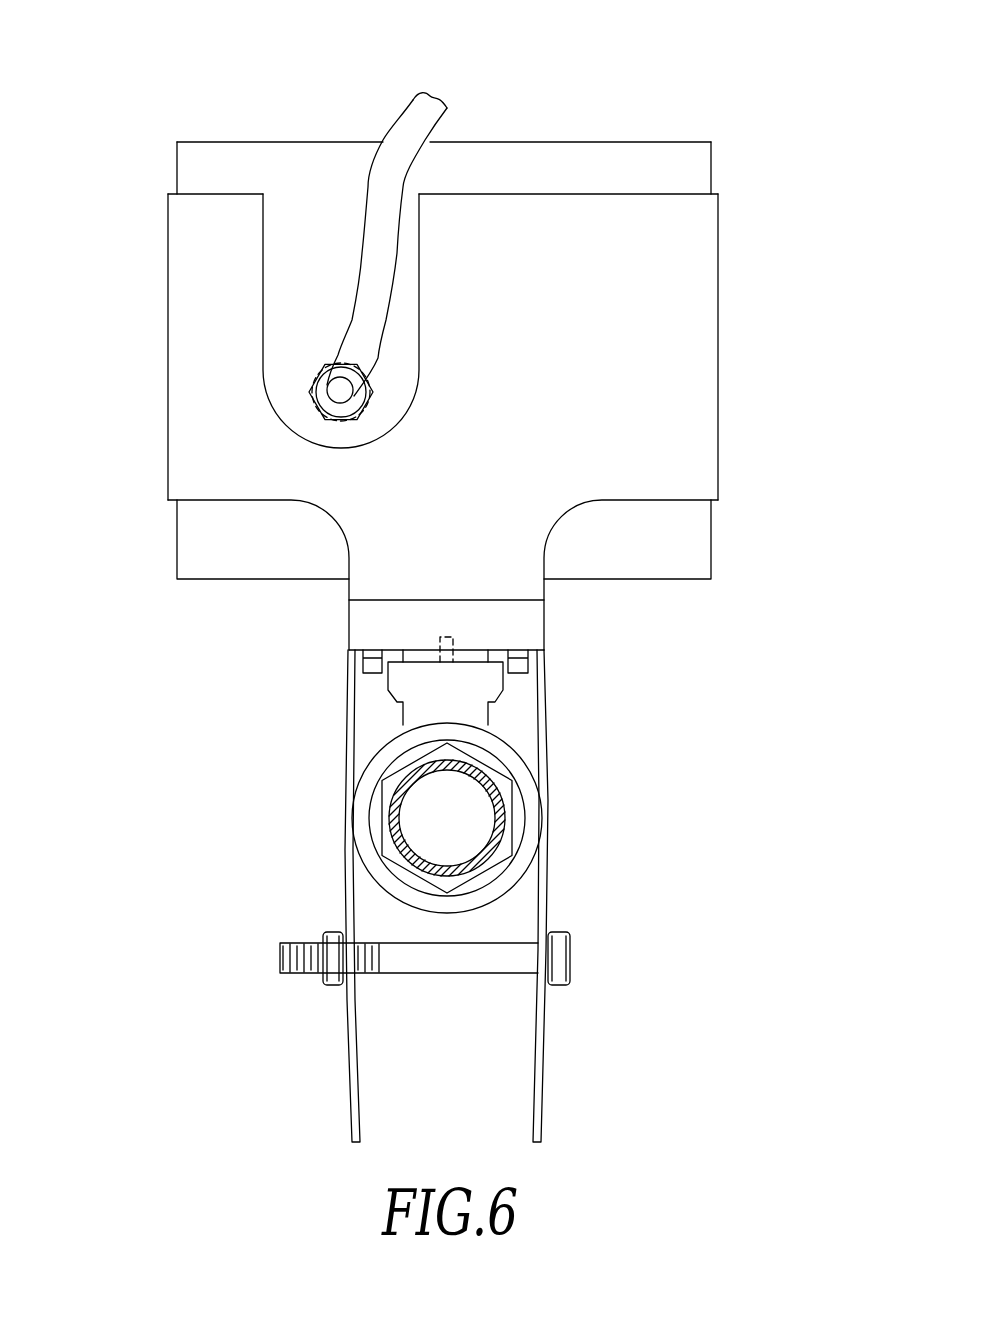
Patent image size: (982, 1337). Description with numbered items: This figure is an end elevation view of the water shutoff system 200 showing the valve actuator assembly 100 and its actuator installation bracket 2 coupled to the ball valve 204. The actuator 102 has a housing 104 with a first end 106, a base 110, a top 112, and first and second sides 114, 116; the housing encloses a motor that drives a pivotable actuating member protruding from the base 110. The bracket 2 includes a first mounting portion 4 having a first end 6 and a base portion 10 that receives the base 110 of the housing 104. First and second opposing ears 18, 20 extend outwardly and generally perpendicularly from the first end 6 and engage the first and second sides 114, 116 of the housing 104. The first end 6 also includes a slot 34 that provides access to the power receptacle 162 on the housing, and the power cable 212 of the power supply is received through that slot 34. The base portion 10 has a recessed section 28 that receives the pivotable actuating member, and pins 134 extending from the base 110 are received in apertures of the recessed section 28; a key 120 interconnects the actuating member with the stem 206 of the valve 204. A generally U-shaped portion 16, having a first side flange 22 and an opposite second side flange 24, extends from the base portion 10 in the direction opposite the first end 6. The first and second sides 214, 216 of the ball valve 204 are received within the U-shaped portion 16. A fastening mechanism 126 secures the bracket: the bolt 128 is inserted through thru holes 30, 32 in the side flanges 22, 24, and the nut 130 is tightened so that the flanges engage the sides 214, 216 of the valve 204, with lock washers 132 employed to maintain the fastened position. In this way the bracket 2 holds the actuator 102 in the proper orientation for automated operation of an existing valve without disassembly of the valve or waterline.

The actuator installation bracket 2 is at (722, 385).
The first mounting portion 4 is at (725, 173).
The first end 6 is at (571, 365).
The base portion 10 is at (365, 600).
The generally U-shaped portion 16 is at (516, 898).
The first ear 18 is at (168, 225).
The second ear 20 is at (707, 297).
The first side flange 22 is at (347, 828).
The second side flange 24 is at (548, 855).
The recessed section 28 is at (533, 622).
The thru hole 30 is at (355, 975).
The thru hole 32 is at (535, 975).
The slot 34 is at (413, 293).
The valve actuator assembly 100 is at (143, 392).
The actuator 102 is at (254, 132).
The housing 104 is at (323, 165).
The first end 106 is at (284, 256).
The base 110 is at (672, 580).
The top 112 is at (562, 142).
The first side 114 is at (177, 160).
The second side 116 is at (712, 540).
The key 120 is at (417, 660).
The fastening mechanism 126 is at (318, 927).
The bolt 128 is at (453, 967).
The nut 130 is at (325, 985).
The lock washer 132 is at (343, 987).
The pins 134 is at (373, 663).
The power receptacle 162 is at (315, 396).
The water shutoff system 200 is at (663, 1130).
The ball valve 204 is at (505, 757).
The stem 206 is at (445, 645).
The power cable 212 is at (413, 100).
The first side 214 is at (365, 770).
The second side 216 is at (537, 773).